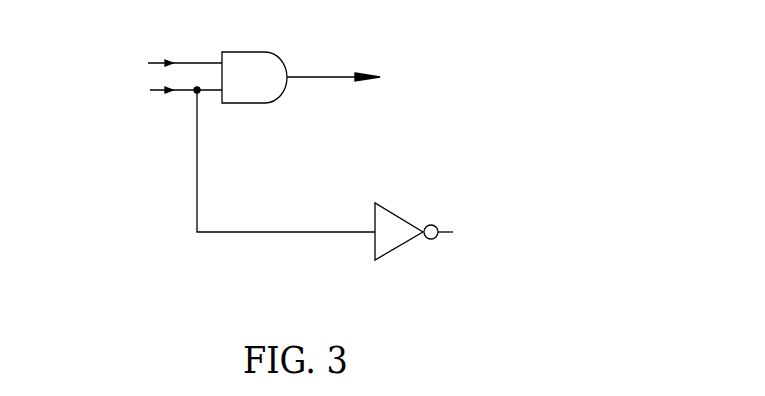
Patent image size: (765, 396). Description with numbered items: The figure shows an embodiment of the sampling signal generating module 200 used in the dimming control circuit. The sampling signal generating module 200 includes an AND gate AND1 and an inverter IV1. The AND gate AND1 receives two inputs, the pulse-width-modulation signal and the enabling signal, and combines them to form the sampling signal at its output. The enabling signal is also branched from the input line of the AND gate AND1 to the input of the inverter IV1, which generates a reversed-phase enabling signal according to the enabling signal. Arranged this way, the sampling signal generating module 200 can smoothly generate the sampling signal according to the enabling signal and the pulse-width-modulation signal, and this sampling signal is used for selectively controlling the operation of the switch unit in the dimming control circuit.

The sampling signal generating module 200 is at (137, 211).
The AND gate AND1 is at (254, 77).
The inverter IV1 is at (385, 209).